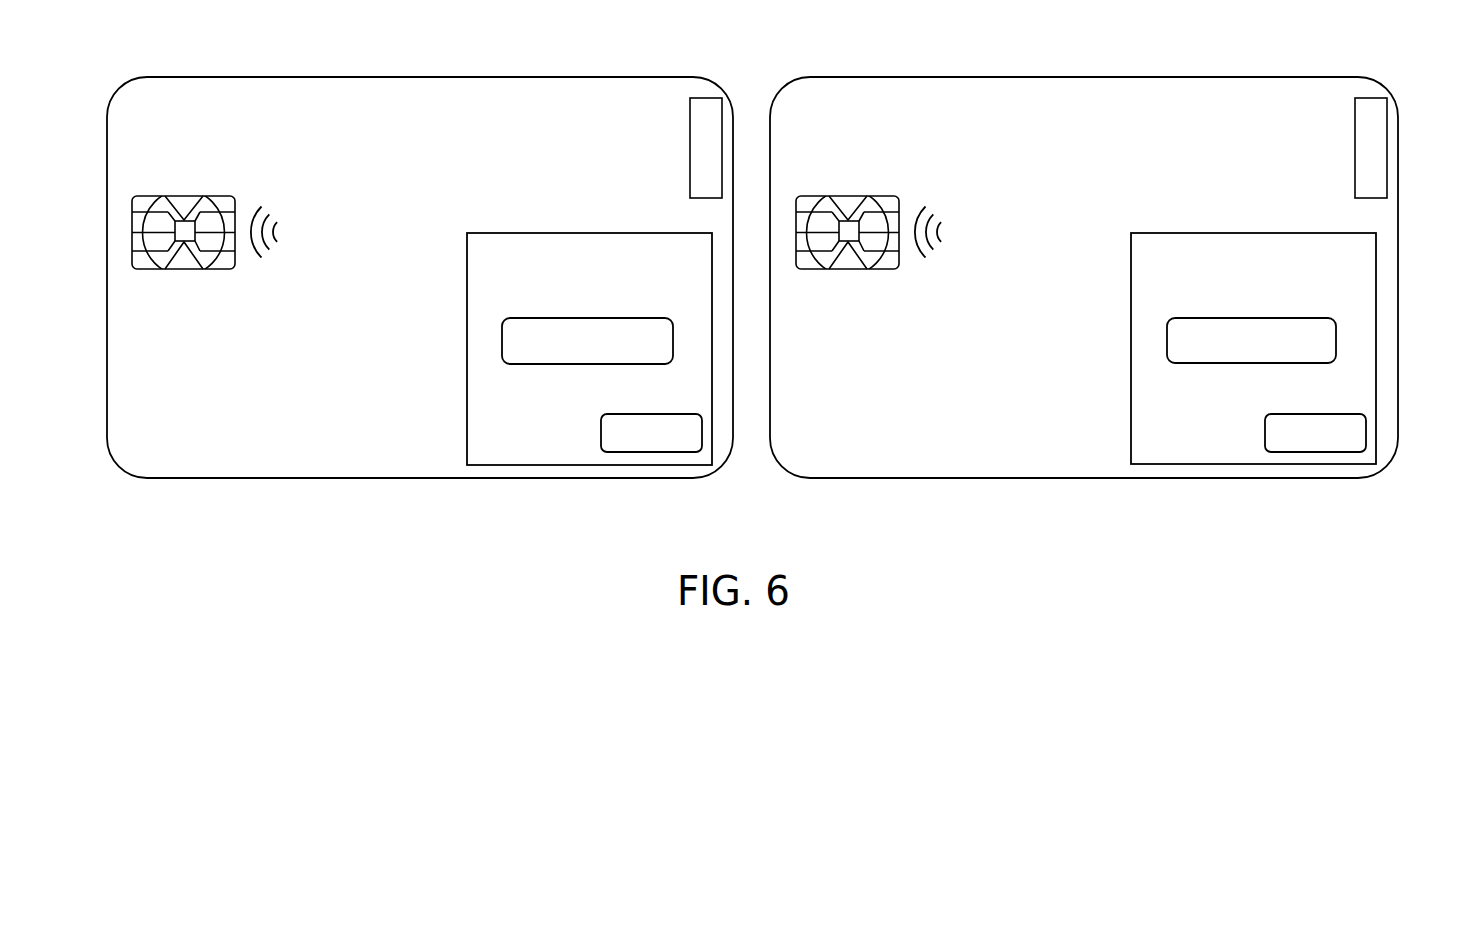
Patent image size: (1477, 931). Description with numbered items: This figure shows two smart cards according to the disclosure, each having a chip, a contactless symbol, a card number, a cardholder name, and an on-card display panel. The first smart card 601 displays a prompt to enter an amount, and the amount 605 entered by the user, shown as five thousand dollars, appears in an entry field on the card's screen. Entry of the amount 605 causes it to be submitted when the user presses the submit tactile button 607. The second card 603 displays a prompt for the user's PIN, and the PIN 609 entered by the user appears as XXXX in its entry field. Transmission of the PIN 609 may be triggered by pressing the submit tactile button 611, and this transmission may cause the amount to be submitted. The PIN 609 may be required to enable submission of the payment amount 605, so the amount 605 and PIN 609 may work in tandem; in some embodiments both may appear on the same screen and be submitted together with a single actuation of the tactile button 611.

The smart card 601 is at (445, 77).
The second card 603 is at (1072, 77).
The amount 605 is at (503, 350).
The submit tactile button 607 is at (625, 453).
The PIN 609 is at (1168, 350).
The submit tactile button 611 is at (1367, 433).